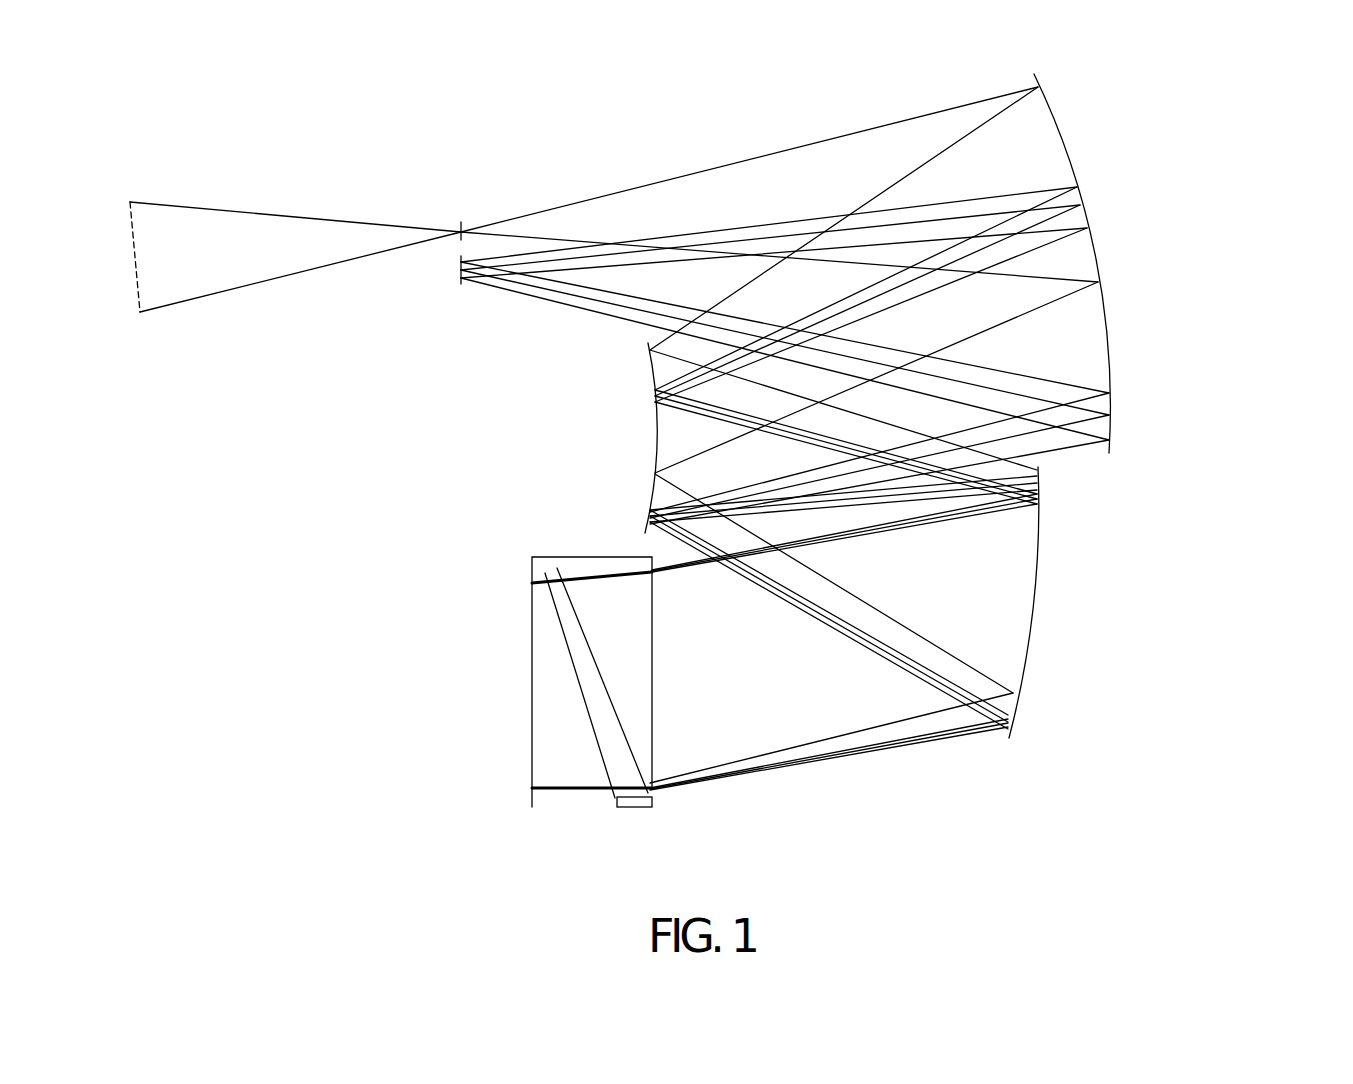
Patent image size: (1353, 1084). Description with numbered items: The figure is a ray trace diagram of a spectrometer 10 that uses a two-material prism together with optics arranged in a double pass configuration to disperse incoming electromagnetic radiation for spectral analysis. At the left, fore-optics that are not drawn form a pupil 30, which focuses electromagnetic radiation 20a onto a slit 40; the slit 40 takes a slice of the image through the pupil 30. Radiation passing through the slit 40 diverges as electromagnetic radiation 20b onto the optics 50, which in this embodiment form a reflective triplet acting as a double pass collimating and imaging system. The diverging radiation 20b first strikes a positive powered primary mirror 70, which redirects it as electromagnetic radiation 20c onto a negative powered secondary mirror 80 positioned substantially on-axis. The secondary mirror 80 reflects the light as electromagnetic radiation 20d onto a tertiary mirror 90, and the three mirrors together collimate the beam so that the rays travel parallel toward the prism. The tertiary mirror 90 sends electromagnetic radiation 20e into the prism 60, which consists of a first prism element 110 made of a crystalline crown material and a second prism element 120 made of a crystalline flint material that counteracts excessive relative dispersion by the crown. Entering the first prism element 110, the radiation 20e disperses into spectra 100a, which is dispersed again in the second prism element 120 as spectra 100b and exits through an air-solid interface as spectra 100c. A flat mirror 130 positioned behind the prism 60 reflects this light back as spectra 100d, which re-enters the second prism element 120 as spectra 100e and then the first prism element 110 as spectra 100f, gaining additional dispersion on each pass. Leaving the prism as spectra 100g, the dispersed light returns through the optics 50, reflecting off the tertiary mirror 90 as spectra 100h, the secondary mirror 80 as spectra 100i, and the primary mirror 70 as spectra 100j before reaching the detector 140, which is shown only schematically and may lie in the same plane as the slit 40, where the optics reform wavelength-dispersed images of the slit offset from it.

The spectrometer 10 is at (1287, 107).
The pupil 30 is at (116, 255).
The electromagnetic radiation 20a is at (261, 214).
The slit 40 is at (463, 210).
The detector 140 is at (461, 278).
The electromagnetic radiation 20b is at (723, 167).
The primary mirror 70 is at (1098, 250).
The electromagnetic radiation 20c is at (930, 158).
The spectra 100j is at (783, 222).
The secondary mirror 80 is at (652, 395).
The spectra 100i is at (846, 297).
The electromagnetic radiation 20d is at (873, 419).
The spectra 100h is at (685, 423).
The tertiary mirror 90 is at (1040, 603).
The electromagnetic radiation 20e is at (1038, 495).
The optics 50 is at (1091, 530).
The spectra 100g is at (701, 582).
The flat mirror 130 is at (530, 705).
The second prism element 120 is at (585, 678).
The first prism element 110 is at (635, 677).
The prism 60 is at (642, 833).
The spectra 100a is at (594, 554).
The spectra 100b is at (549, 556).
The spectra 100c is at (534, 558).
The spectra 100d is at (531, 597).
The spectra 100e is at (551, 599).
The spectra 100f is at (613, 599).